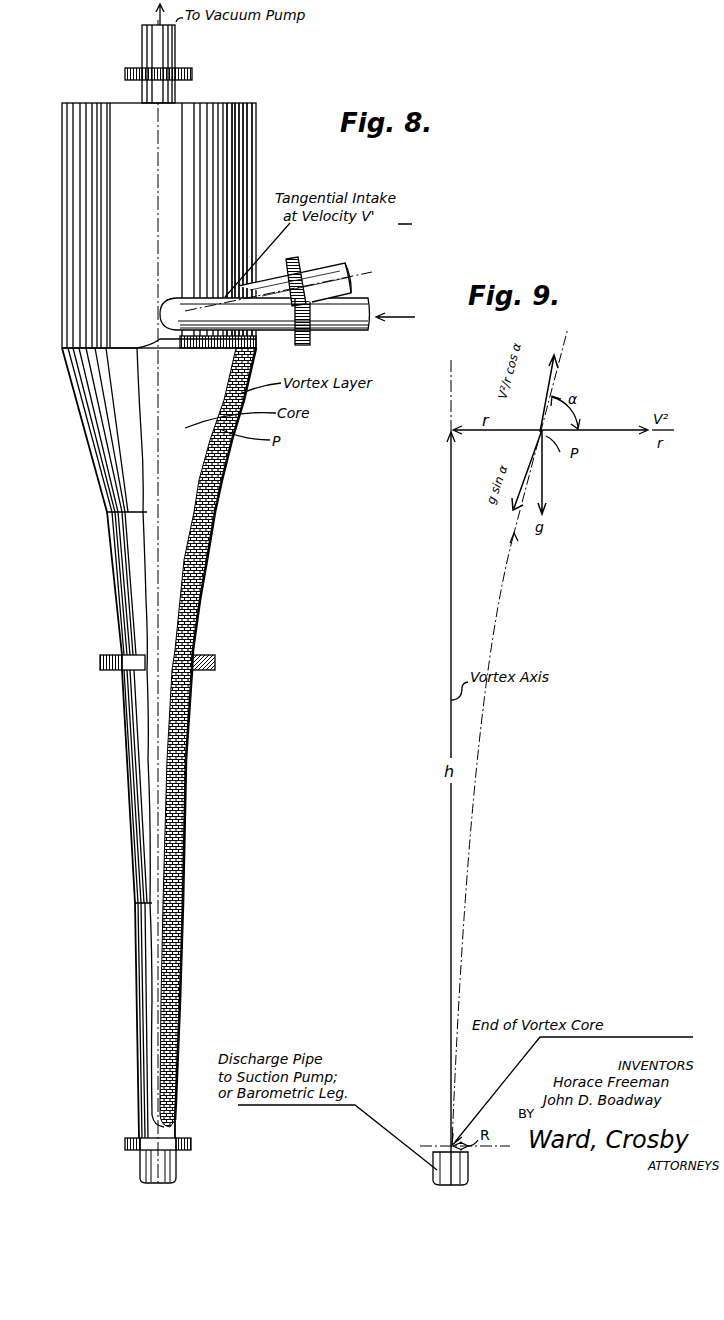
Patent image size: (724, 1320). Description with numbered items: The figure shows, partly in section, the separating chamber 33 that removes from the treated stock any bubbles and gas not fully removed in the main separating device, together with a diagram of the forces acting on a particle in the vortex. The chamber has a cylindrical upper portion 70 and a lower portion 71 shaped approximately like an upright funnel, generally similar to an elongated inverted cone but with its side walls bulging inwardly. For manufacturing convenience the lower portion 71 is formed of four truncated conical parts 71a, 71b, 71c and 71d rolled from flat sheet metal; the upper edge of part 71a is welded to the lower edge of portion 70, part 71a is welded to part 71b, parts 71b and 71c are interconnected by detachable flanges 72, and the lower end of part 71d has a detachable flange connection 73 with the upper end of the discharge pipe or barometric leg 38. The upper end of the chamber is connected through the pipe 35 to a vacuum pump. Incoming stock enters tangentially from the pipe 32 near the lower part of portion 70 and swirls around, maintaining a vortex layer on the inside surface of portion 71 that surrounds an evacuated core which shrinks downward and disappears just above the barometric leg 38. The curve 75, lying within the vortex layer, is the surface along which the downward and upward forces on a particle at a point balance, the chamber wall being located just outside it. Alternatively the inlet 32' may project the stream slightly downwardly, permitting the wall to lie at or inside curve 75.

In FIG. 8, the separating chamber 33 is at (55, 135).
In FIG. 8, the pipe 35 is at (142, 47).
In FIG. 8, the upper portion 70 is at (73, 331).
In FIG. 8, the lower portion 71 is at (113, 743).
In FIG. 8, the truncated conical part 71a is at (96, 466).
In FIG. 8, the truncated conical part 71b is at (116, 620).
In FIG. 8, the truncated conical part 71c is at (125, 762).
In FIG. 8, the truncated conical part 71d is at (136, 944).
In FIG. 8, the detachable flanges 72 is at (108, 670).
In FIG. 8, the detachable flange connection 73 is at (132, 1140).
In FIG. 8, the curve 75 is at (215, 488).
In FIG. 9, the curve 75 is at (517, 535).
In FIG. 8, the pipe 32 is at (287, 322).
In FIG. 8, the inlet 32' is at (285, 274).
In FIG. 8, the discharge pipe or barometric leg 38 is at (140, 1168).